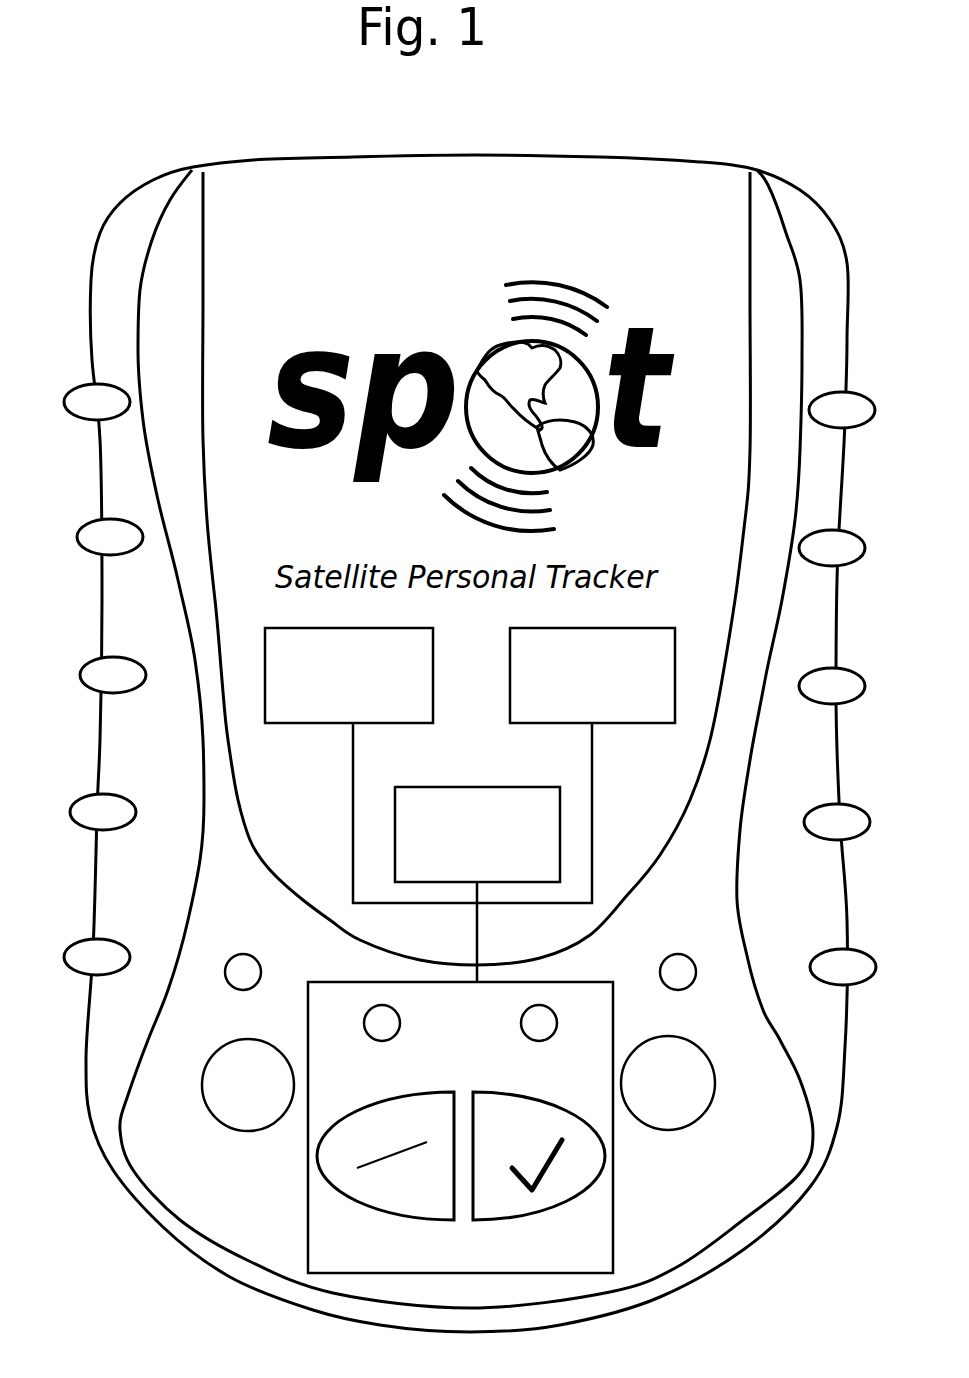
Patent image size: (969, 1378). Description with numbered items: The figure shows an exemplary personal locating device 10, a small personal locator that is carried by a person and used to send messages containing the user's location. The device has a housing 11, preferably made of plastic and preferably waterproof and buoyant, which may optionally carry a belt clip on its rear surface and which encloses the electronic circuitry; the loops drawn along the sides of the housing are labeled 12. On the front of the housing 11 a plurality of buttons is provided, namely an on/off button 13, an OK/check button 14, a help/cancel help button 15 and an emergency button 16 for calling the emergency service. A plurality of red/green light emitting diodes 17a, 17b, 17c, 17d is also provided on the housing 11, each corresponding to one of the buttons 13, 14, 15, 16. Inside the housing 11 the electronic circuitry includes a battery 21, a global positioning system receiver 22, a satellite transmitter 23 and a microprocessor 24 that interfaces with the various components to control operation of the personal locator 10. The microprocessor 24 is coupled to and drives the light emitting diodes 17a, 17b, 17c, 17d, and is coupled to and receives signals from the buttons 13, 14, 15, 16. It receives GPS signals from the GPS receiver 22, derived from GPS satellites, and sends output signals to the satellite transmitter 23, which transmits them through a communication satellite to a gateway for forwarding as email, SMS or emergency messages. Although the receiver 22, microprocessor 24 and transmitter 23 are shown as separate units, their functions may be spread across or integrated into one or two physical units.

The personal locating device 10 is at (190, 86).
The housing 11 is at (100, 238).
The strap attachment loops 12 is at (75, 418).
The on/off button 13 is at (362, 1207).
The OK/check button 14 is at (552, 1205).
The help/cancel help button 15 is at (241, 1132).
The 911 emergency button 16 is at (676, 1131).
The light emitting diode 17a is at (241, 991).
The light emitting diode 17b is at (378, 1042).
The light emitting diode 17c is at (541, 1042).
The light emitting diode 17d is at (688, 986).
The battery 21 is at (614, 1222).
The GPS receiver 22 is at (636, 724).
The satellite transmitter 23 is at (300, 724).
The microprocessor 24 is at (473, 787).